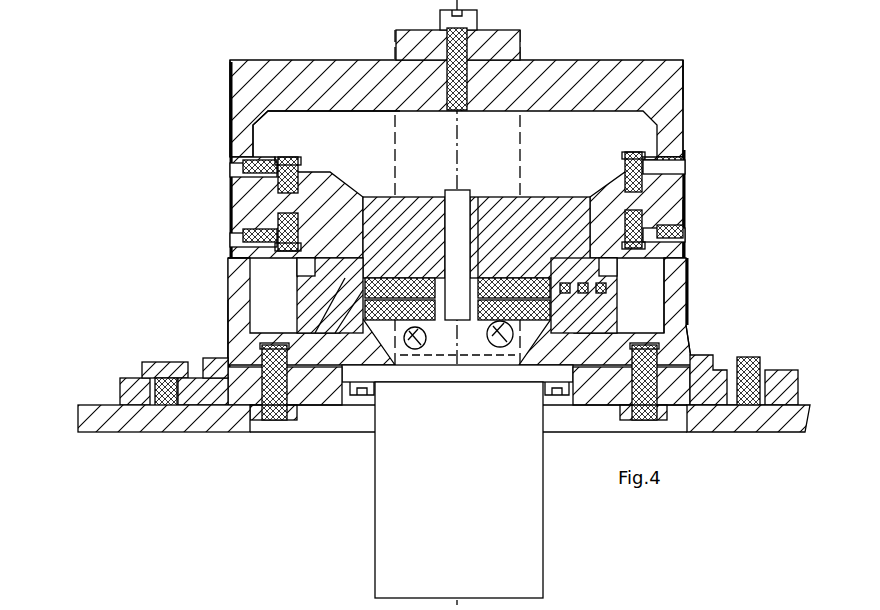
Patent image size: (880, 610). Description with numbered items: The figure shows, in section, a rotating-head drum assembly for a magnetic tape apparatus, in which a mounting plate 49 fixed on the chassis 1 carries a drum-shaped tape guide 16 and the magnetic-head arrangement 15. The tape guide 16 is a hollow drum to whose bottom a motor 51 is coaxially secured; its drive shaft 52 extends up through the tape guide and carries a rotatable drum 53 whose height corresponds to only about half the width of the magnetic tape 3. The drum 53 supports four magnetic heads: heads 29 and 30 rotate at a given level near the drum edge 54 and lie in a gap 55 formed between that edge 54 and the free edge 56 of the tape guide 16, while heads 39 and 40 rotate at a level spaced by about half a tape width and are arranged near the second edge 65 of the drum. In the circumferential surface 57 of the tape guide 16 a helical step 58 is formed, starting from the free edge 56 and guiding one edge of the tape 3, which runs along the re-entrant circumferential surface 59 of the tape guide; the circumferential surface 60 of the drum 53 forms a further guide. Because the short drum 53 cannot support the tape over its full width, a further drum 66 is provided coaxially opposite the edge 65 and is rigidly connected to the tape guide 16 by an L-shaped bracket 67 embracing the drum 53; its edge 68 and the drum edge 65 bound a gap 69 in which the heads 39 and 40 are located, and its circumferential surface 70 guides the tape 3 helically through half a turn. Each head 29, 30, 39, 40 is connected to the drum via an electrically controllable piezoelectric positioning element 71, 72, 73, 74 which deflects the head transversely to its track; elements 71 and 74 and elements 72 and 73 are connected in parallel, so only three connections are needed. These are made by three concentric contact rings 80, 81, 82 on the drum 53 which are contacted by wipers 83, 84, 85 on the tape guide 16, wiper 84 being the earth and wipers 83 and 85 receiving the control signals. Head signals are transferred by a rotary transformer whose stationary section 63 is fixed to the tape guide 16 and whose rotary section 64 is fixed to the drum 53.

The chassis 1 is at (140, 425).
The magnetic tape 3 is at (231, 112).
The magnetic-head arrangement 15 is at (362, 190).
The tape guide 16 is at (224, 300).
The magnetic head 29 is at (280, 246).
The magnetic head 30 is at (690, 252).
The magnetic head 39 is at (688, 162).
The magnetic head 40 is at (280, 162).
The mounting plate 49 is at (762, 368).
The motor 51 is at (388, 468).
The drive shaft 52 is at (446, 200).
The drum 53 is at (668, 190).
The edge of the drum 54 is at (688, 212).
The gap 55 is at (688, 247).
The free edge of the tape guide 56 is at (616, 270).
The circumferential surface of the tape guide 57 is at (229, 318).
The helical step 58 is at (230, 260).
The re-entrant circumferential surface 59 is at (688, 288).
The circumferential surface of the drum 60 is at (231, 192).
The stationary transformer section 63 is at (290, 360).
The rotary transformer section 64 is at (505, 278).
The second edge of the drum 65 is at (624, 166).
The further drum 66 is at (634, 66).
The L-shaped bracket 67 is at (512, 48).
The edge of the further drum 68 is at (302, 156).
The gap 69 is at (684, 165).
The circumferential surface of the further drum 70 is at (684, 70).
The positioning element 71 is at (258, 238).
The positioning element 72 is at (656, 236).
The positioning element 73 is at (655, 170).
The positioning element 74 is at (258, 170).
The contact ring 80 is at (565, 294).
The contact ring 81 is at (584, 294).
The contact ring 82 is at (602, 294).
The wiper 83 is at (308, 278).
The wiper 84 is at (325, 305).
The wiper 85 is at (345, 320).